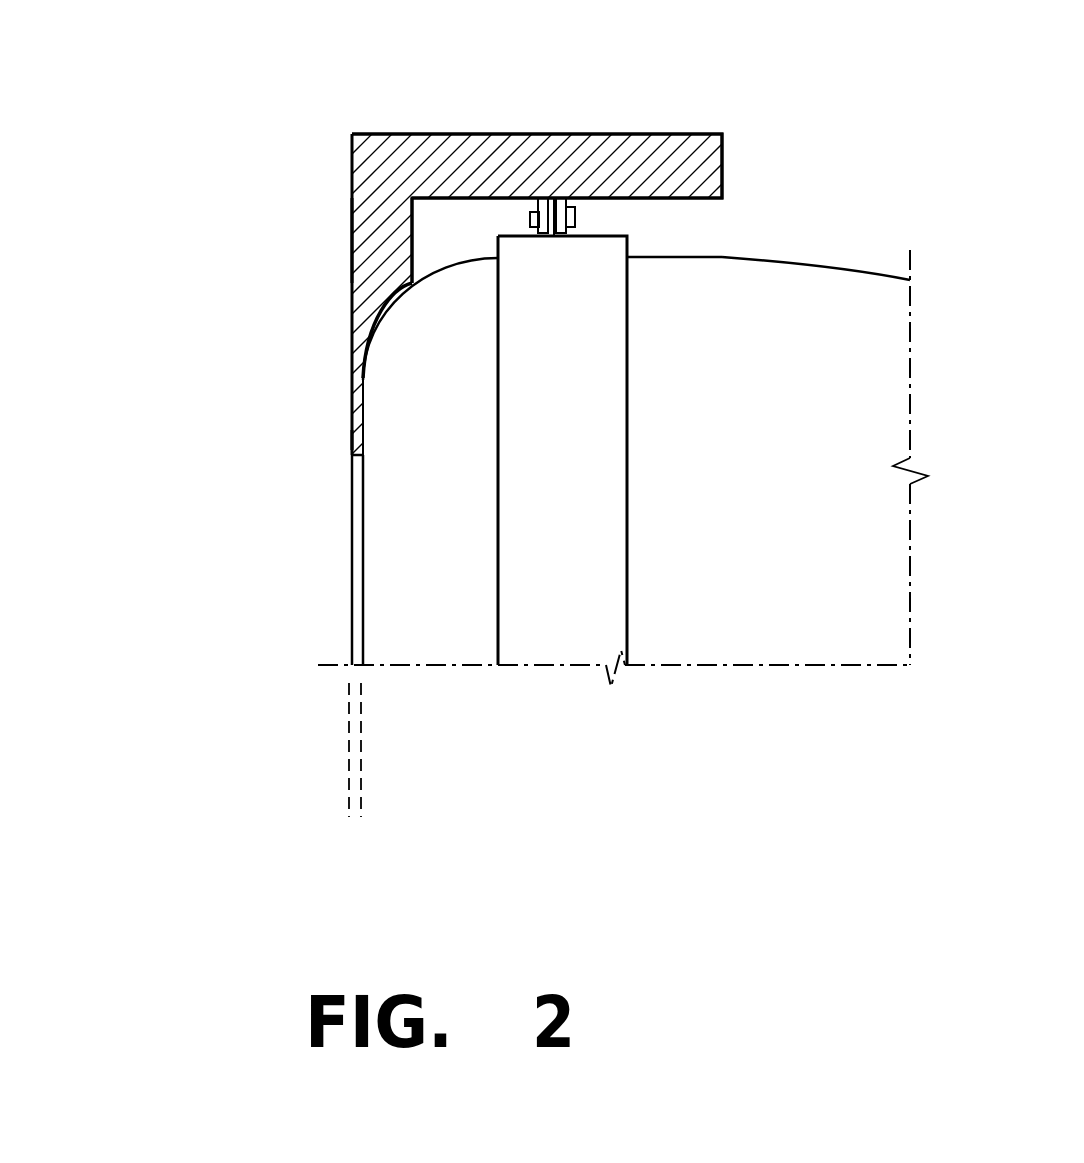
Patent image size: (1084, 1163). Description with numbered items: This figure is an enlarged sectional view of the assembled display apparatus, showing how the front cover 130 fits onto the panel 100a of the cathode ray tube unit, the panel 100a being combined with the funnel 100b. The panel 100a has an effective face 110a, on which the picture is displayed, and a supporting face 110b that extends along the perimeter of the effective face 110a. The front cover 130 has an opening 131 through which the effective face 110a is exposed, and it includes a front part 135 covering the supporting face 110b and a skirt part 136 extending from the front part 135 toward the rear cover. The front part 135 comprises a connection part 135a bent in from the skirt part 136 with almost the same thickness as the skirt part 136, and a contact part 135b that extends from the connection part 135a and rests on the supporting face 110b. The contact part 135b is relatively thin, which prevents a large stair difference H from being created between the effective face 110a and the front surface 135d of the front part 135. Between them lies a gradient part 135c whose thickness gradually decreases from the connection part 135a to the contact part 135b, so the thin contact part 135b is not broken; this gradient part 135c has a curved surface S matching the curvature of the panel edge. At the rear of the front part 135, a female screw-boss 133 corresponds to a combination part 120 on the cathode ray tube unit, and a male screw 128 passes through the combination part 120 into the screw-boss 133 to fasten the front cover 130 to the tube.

The front cover 130 is at (120, 143).
The skirt part 136 is at (448, 134).
The front part 135 is at (202, 220).
The connection part 135a is at (352, 224).
The contact part 135b is at (352, 410).
The gradient part 135c is at (352, 313).
The front surface 135d is at (353, 438).
The opening 131 is at (352, 458).
The effective face 110a is at (352, 597).
The supporting face 110b is at (472, 258).
The female screw-boss 133 is at (531, 197).
The combination part 120 is at (554, 197).
The male screw 128 is at (575, 198).
The panel 100a is at (443, 666).
The funnel 100b is at (767, 666).
The curved surface S is at (363, 347).
The stair difference H is at (432, 802).